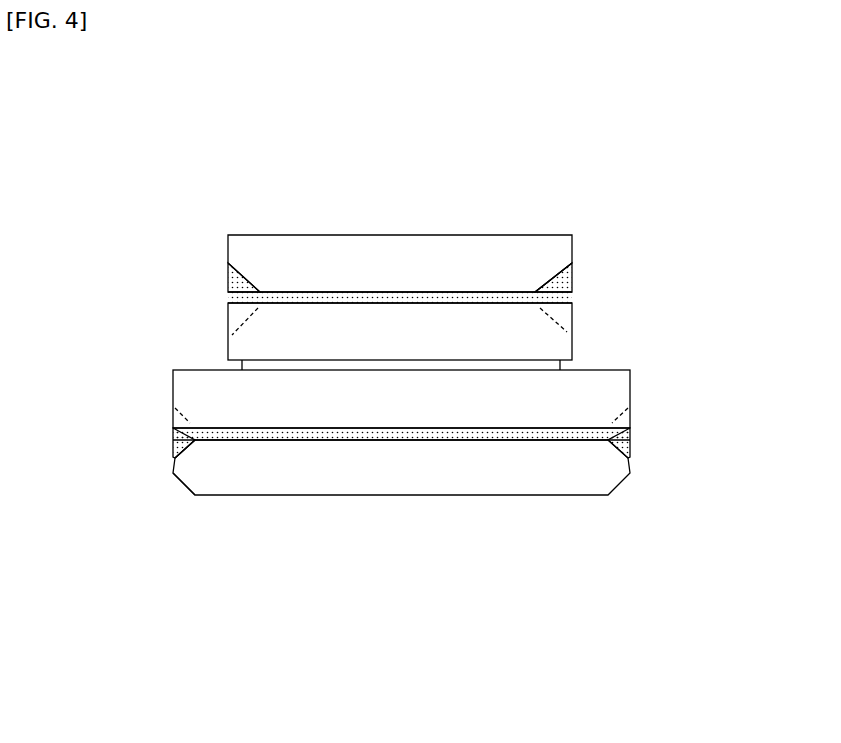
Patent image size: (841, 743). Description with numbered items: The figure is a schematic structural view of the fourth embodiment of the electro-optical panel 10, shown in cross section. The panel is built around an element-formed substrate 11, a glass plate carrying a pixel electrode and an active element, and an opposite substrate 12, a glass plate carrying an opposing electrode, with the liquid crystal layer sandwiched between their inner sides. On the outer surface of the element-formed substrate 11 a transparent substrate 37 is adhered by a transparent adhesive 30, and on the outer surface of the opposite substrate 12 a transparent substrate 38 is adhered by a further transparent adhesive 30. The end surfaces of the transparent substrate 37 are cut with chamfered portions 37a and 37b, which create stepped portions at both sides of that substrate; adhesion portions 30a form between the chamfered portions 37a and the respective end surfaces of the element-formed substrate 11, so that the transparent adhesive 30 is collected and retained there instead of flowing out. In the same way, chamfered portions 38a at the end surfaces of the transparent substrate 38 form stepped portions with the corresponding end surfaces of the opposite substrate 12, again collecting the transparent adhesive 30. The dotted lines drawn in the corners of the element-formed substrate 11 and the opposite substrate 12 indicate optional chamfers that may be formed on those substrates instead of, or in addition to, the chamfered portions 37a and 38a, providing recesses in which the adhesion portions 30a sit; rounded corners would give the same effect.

The electro-optical panel 10 is at (157, 358).
The element-formed substrate 11 is at (632, 395).
The opposite substrate 12 is at (573, 328).
The transparent adhesive 30 is at (448, 292).
The adhesion portion 30a is at (240, 298).
The transparent substrate 37 is at (315, 495).
The chamfered portion 37a is at (177, 443).
The chamfered portion 37b is at (186, 487).
The transparent substrate 38 is at (343, 235).
The chamfered portion 38a is at (563, 282).